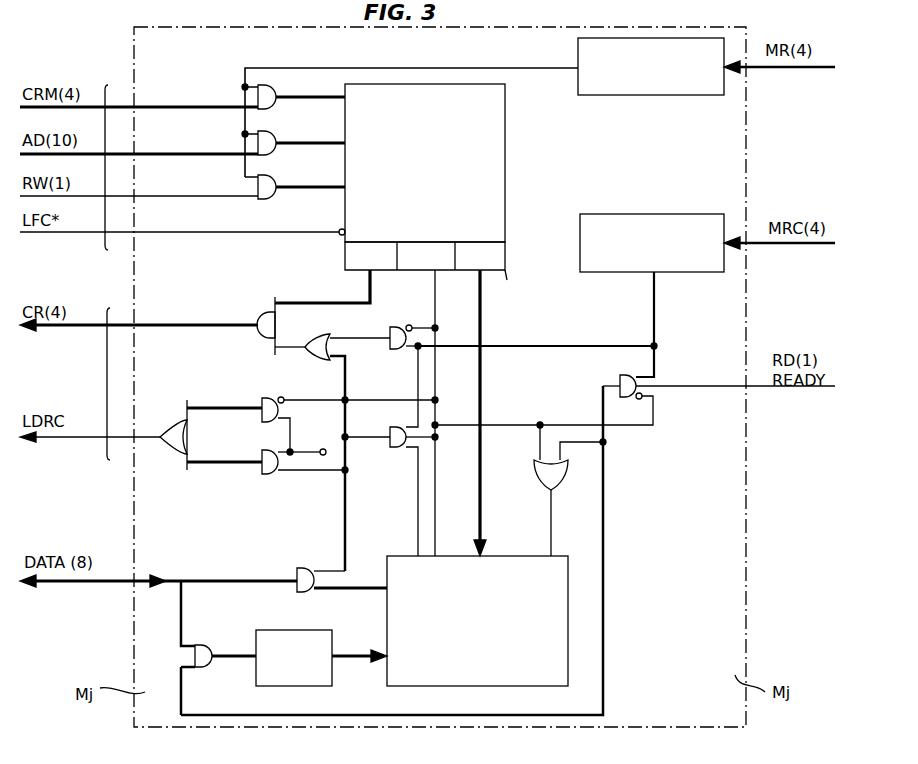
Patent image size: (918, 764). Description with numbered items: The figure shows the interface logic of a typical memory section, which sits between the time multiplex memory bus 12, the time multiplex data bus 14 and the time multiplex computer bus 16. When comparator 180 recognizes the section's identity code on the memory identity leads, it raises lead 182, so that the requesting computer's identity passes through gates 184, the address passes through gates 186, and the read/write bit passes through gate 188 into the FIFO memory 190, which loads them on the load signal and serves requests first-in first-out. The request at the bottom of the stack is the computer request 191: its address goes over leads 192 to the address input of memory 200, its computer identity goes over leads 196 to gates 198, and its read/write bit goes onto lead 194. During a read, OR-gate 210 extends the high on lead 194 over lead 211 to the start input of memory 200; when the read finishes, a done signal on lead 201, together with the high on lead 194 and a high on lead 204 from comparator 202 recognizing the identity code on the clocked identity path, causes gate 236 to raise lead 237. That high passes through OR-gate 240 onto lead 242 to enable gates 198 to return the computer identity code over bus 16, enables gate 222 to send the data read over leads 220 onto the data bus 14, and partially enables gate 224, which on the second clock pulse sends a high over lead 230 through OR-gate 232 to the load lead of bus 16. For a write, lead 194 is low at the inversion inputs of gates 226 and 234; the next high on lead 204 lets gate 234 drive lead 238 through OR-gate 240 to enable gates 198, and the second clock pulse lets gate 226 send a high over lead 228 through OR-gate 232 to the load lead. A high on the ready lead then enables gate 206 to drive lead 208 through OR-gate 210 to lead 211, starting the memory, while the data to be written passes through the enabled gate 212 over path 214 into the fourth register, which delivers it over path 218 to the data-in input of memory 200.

The time multiplex memory bus 12 is at (100, 250).
The time multiplex data bus 14 is at (90, 585).
The time multiplex computer bus 16 is at (104, 460).
The comparator 180 is at (645, 95).
The lead 182 is at (243, 67).
The gates 184 is at (301, 88).
The gates 186 is at (301, 134).
The gate 188 is at (301, 178).
The FIFO memory 190 is at (496, 166).
The computer request 191 is at (506, 259).
The leads 192 is at (481, 390).
The lead 194 is at (436, 372).
The leads 196 is at (297, 297).
The gates 198 is at (254, 325).
The memory 200 is at (470, 675).
The lead 201 is at (418, 487).
The comparator 202 is at (650, 213).
The lead 204 is at (568, 345).
The gate 206 is at (624, 372).
The lead 208 is at (605, 614).
The OR-gate 210 is at (553, 460).
The lead 211 is at (551, 520).
The gate 212 is at (203, 624).
The path 214 is at (228, 662).
The path 218 is at (355, 660).
The leads 220 is at (357, 590).
The gate 222 is at (309, 571).
The gate 224 is at (303, 467).
The gate 226 is at (334, 417).
The lead 228 is at (195, 405).
The lead 230 is at (212, 465).
The OR-gate 232 is at (164, 435).
The gate 234 is at (403, 330).
The gate 236 is at (390, 396).
The lead 237 is at (345, 524).
The lead 238 is at (372, 340).
The OR-gate 240 is at (332, 444).
The lead 242 is at (292, 352).